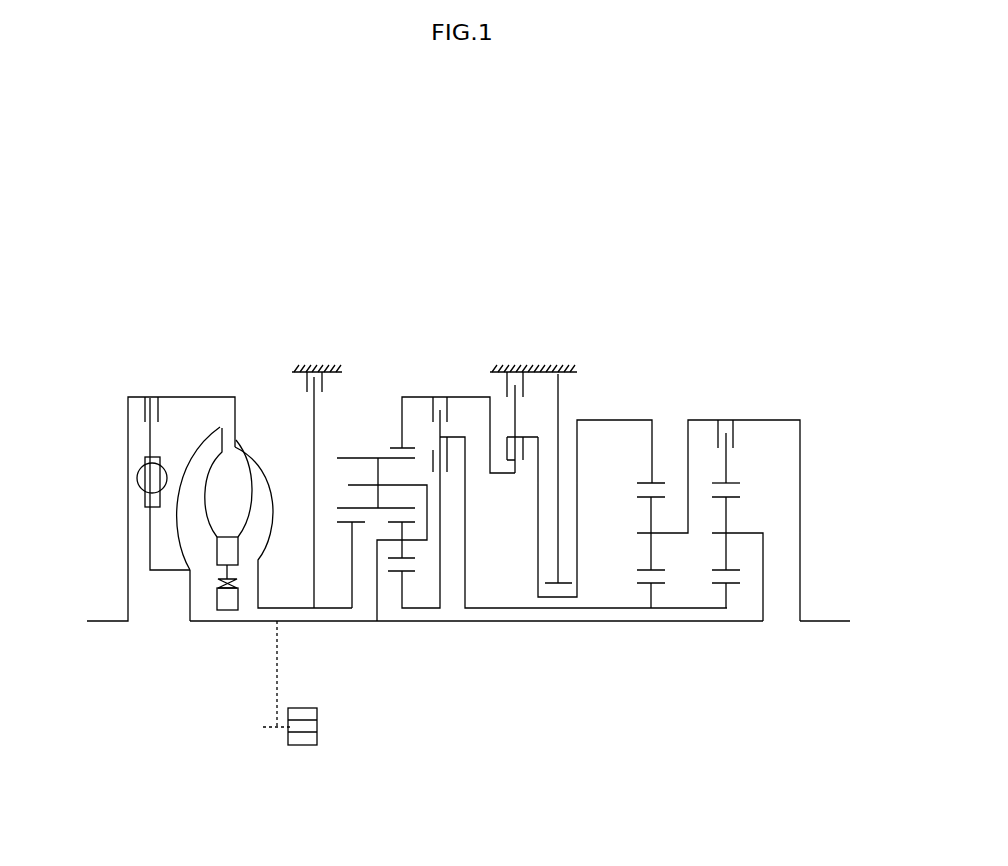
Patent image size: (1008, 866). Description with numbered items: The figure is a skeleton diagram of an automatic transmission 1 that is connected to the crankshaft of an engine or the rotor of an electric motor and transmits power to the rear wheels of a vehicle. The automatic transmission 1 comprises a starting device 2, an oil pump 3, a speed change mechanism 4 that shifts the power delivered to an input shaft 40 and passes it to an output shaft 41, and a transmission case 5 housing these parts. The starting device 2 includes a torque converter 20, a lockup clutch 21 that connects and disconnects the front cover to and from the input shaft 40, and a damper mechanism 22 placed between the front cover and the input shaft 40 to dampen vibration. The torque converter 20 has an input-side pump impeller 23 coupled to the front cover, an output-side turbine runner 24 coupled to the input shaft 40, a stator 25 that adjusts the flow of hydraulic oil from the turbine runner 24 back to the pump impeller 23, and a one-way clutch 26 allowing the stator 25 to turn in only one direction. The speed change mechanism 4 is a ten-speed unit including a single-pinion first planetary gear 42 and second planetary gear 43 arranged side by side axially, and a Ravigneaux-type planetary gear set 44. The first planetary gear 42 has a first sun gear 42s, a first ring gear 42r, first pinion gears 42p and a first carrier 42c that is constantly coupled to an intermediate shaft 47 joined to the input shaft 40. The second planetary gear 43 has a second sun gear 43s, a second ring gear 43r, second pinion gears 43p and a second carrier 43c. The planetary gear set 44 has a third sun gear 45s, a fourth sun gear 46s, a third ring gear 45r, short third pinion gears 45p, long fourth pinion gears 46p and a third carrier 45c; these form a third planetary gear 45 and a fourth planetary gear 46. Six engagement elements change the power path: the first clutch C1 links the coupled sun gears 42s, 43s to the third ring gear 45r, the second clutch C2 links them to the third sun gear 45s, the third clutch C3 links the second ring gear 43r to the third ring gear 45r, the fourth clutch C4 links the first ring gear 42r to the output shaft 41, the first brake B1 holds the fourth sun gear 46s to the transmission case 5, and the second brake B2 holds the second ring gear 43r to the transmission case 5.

The automatic transmission 1 is at (528, 226).
The starting device 2 is at (241, 365).
The oil pump 3 is at (317, 745).
The speed change mechanism 4 is at (618, 351).
The transmission case 5 is at (294, 380).
The torque converter 20 is at (212, 409).
The lockup clutch 21 is at (142, 410).
The damper mechanism 22 is at (142, 497).
The pump impeller 23 is at (238, 430).
The turbine runner 24 is at (192, 443).
The stator 25 is at (227, 533).
The one-way clutch 26 is at (217, 597).
The input shaft 40 is at (240, 625).
The output shaft 41 is at (825, 625).
The first planetary gear 42 is at (729, 634).
The first carrier 42c is at (770, 567).
The first pinion gears 42p is at (728, 513).
The first ring gear 42r is at (733, 483).
The first sun gear 42s is at (732, 590).
The second planetary gear 43 is at (650, 634).
The second carrier 43c is at (667, 535).
The second pinion gears 43p is at (645, 518).
The second ring gear 43r is at (645, 482).
The second sun gear 43s is at (645, 592).
The planetary gear set 44 is at (337, 702).
The third planetary gear 45 is at (413, 636).
The third carrier 45c is at (427, 520).
The third pinion gears 45p is at (410, 560).
The third ring gear 45r is at (395, 448).
The third sun gear 45s is at (412, 575).
The fourth planetary gear 46 is at (358, 636).
The fourth pinion gears 46p is at (372, 457).
The fourth sun gear 46s is at (342, 523).
The intermediate shaft 47 is at (560, 625).
The first brake B1 is at (328, 388).
The second brake B2 is at (521, 388).
The first clutch C1 is at (440, 412).
The second clutch C2 is at (463, 457).
The third clutch C3 is at (533, 445).
The fourth clutch C4 is at (738, 437).